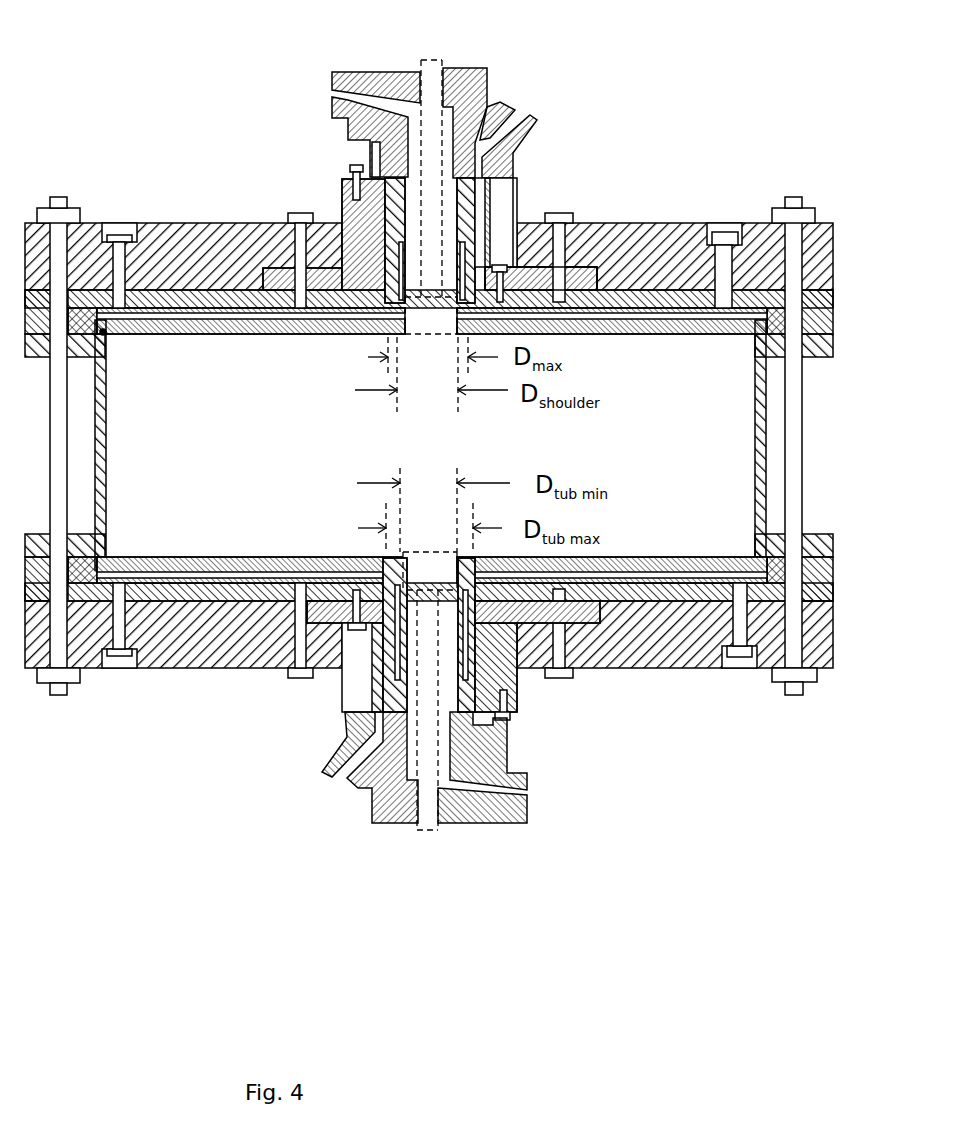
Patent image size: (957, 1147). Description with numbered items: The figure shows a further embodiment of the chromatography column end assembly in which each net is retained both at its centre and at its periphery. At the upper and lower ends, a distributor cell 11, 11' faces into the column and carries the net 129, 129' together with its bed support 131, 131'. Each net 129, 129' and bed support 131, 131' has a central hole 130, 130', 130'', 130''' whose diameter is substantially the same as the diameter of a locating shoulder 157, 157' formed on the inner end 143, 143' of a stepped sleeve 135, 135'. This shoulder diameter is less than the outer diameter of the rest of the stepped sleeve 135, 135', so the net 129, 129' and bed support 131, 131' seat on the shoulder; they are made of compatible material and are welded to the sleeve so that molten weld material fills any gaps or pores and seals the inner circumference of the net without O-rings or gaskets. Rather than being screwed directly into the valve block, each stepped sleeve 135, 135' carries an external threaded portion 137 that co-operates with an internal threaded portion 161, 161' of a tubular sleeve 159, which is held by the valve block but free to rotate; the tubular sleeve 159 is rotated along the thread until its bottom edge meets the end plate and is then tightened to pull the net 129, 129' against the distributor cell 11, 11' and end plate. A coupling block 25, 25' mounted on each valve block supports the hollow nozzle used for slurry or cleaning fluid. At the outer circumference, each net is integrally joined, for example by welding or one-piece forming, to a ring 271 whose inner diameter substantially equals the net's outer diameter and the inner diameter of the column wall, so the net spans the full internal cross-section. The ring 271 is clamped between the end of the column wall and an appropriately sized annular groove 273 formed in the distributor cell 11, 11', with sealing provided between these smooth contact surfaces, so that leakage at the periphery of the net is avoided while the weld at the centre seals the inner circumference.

The distributor cell 11 is at (429, 256).
The distributor cell 11' is at (429, 634).
The coupling block 25 is at (504, 98).
The coupling block 25' is at (538, 773).
The net 129 is at (461, 346).
The net 129' is at (647, 664).
The central hole 130 is at (183, 205).
The central hole 130' is at (485, 205).
The central hole 130'' is at (204, 676).
The central hole 130''' is at (472, 676).
The bed support 131 is at (461, 357).
The bed support 131' is at (659, 650).
The stepped sleeve 135 is at (547, 225).
The stepped sleeve 135' is at (546, 665).
The external threaded portion 137 is at (575, 134).
The inner end 143 is at (565, 242).
The inner end 143' is at (555, 664).
The locating shoulder 157 is at (275, 185).
The locating shoulder 157' is at (315, 690).
The tubular sleeve 159 is at (560, 99).
The internal threaded portion 161 is at (326, 108).
The internal threaded portion 161' is at (285, 777).
The ring 271 is at (185, 358).
The annular groove 273 is at (448, 439).